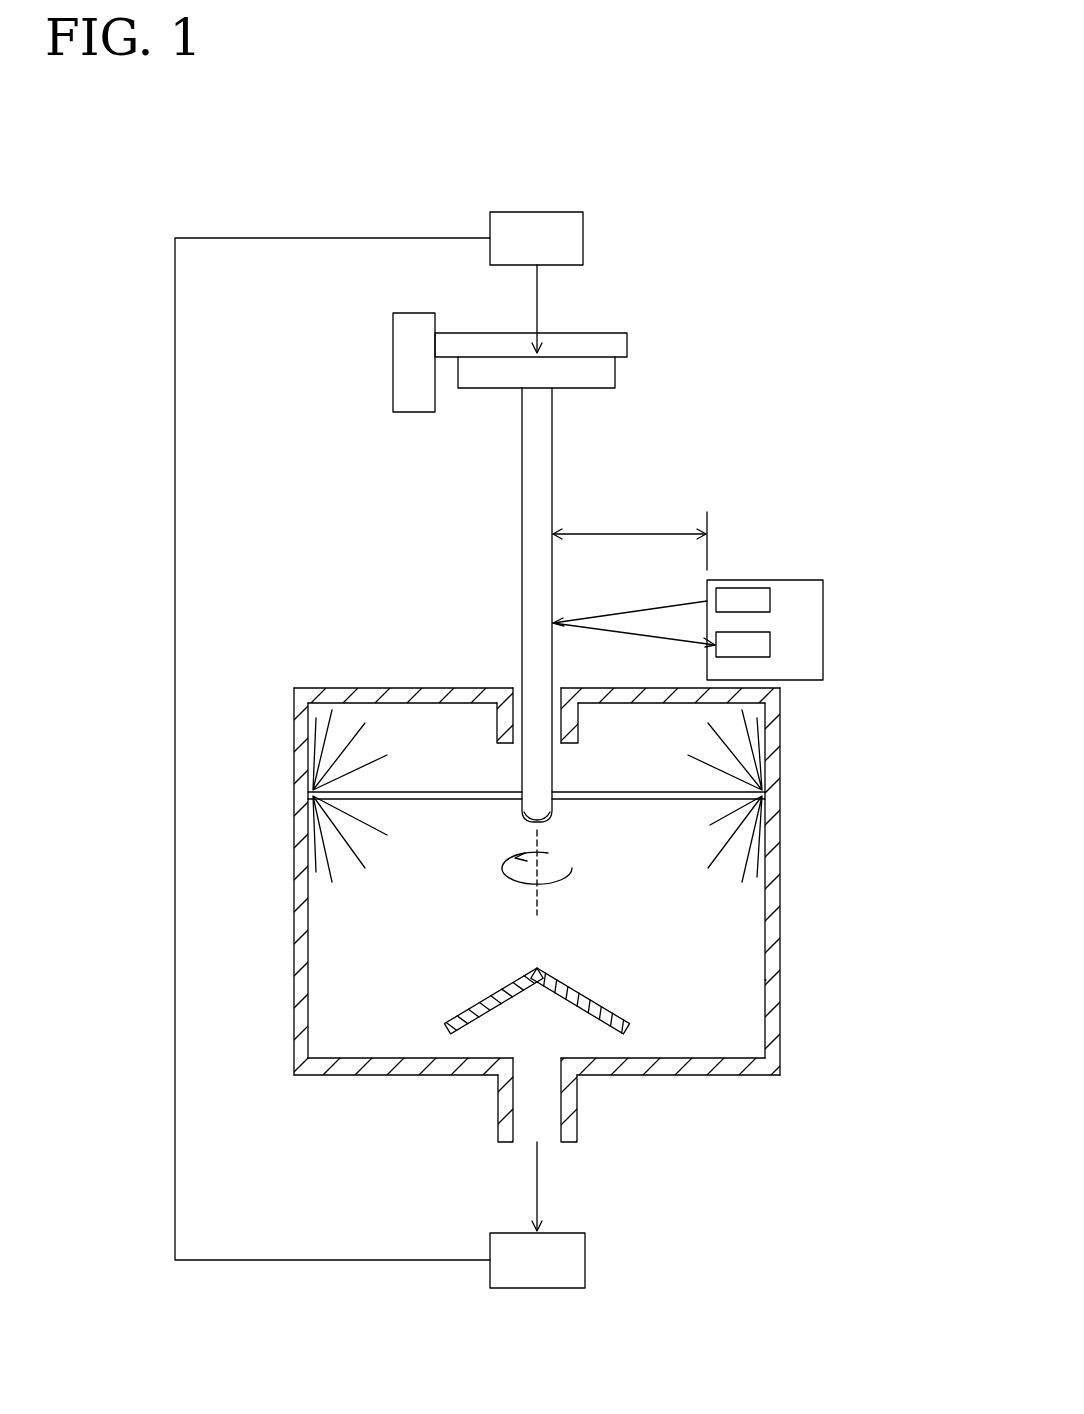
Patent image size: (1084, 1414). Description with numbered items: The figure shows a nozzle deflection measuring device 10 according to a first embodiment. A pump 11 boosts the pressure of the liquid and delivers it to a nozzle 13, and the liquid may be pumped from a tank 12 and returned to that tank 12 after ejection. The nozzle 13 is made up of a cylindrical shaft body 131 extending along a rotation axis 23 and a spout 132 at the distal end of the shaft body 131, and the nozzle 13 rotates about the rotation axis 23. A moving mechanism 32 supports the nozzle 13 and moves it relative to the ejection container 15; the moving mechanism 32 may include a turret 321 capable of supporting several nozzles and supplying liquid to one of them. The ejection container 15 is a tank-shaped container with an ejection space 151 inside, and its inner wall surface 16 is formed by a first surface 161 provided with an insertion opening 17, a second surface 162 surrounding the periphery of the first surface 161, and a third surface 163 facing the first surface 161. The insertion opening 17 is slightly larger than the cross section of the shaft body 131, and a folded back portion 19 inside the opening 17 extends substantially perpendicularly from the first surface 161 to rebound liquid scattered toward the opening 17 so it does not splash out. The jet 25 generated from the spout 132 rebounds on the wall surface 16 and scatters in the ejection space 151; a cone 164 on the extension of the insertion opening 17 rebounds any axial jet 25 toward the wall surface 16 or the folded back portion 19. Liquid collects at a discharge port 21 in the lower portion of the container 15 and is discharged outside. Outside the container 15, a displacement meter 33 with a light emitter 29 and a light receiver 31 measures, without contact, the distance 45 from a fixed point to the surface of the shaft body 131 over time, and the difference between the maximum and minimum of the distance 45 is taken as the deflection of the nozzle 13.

The nozzle deflection measuring device 10 is at (922, 229).
The pump 11 is at (583, 228).
The tank 12 is at (585, 1250).
The nozzle 13 is at (617, 366).
The shaft body 131 is at (522, 484).
The spout 132 is at (520, 800).
The ejection container 15 is at (542, 892).
The wall surface 16 is at (542, 875).
The first surface 161 is at (365, 715).
The second surface 162 is at (762, 913).
The third surface 163 is at (408, 1046).
The cone 164 is at (598, 1005).
The ejection space 151 is at (750, 978).
The insertion opening 17 is at (510, 690).
The folded back portion 19 is at (497, 728).
The discharge port 21 is at (563, 1143).
The rotation axis 23 is at (540, 905).
The jet 25 is at (673, 800).
The light emitter 29 is at (770, 600).
The light receiver 31 is at (770, 648).
The moving mechanism 32 is at (390, 348).
The turret 321 is at (458, 333).
The displacement meter 33 is at (753, 630).
The distance 45 is at (630, 535).